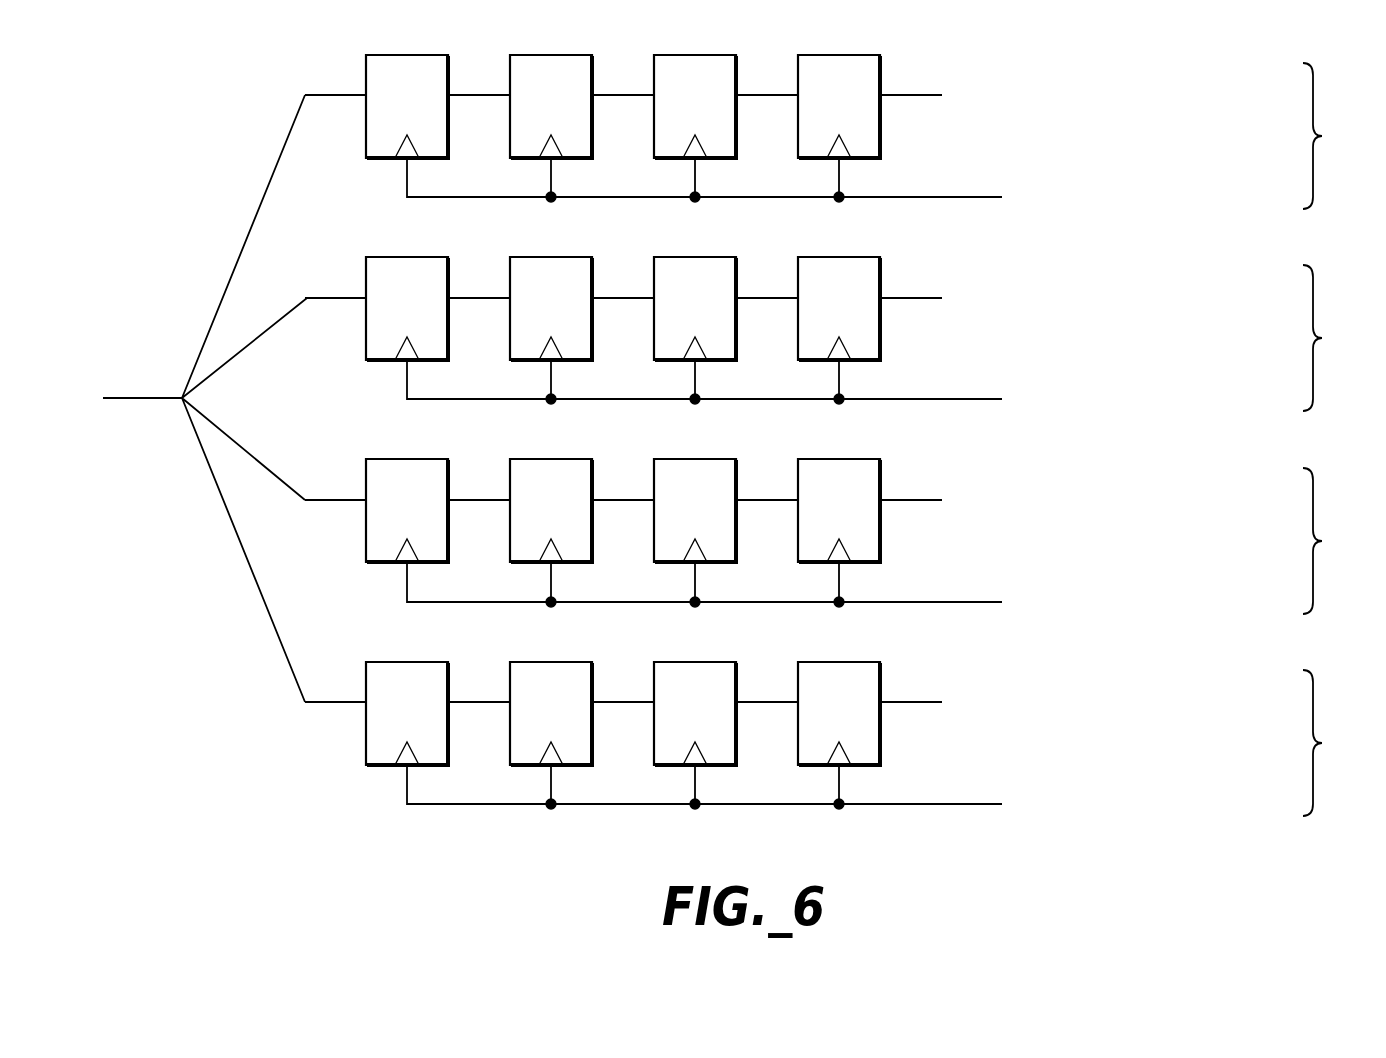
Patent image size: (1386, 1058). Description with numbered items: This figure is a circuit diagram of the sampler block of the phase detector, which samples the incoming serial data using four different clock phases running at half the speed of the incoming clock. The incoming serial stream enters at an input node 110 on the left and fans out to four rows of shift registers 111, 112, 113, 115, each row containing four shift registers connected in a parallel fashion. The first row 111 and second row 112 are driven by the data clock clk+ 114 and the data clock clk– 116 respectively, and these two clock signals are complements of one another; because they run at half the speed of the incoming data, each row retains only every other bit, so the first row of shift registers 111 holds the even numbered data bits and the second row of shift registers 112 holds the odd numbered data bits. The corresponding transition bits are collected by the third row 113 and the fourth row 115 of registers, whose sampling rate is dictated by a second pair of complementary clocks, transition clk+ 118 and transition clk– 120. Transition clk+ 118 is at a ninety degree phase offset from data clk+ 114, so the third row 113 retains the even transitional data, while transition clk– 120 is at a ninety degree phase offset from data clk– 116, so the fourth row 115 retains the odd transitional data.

The input data bus / demultiplexer node 110 is at (158, 397).
The first row of shift registers 111 is at (842, 134).
The second row of shift registers 112 is at (842, 336).
The third row of registers 113 is at (842, 539).
The fourth row of registers 115 is at (842, 741).
The data clock clk+ 114 is at (920, 197).
The data clock clk– 116 is at (920, 399).
The transition clk+ 118 is at (920, 602).
The transition clk– 120 is at (920, 804).